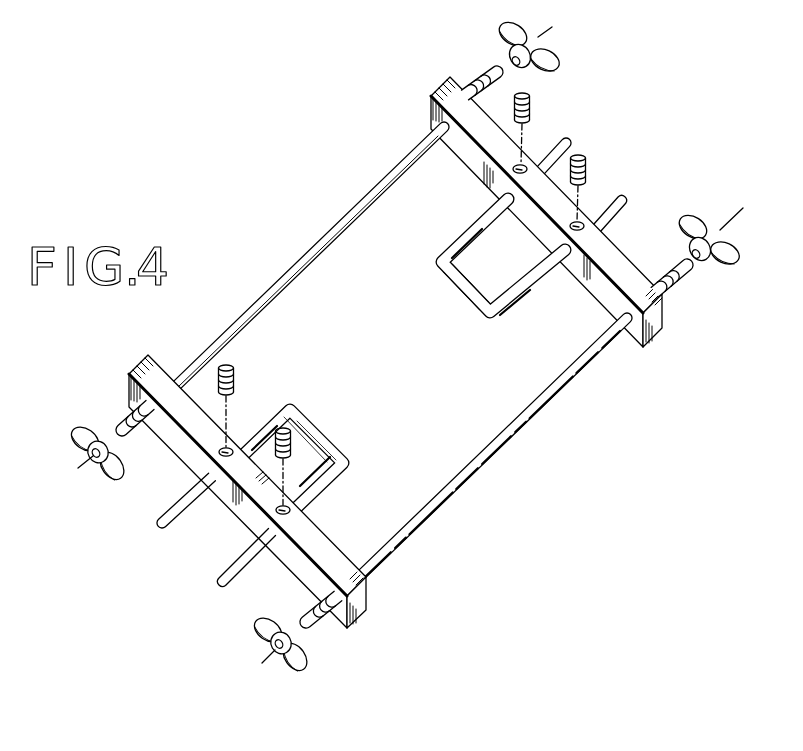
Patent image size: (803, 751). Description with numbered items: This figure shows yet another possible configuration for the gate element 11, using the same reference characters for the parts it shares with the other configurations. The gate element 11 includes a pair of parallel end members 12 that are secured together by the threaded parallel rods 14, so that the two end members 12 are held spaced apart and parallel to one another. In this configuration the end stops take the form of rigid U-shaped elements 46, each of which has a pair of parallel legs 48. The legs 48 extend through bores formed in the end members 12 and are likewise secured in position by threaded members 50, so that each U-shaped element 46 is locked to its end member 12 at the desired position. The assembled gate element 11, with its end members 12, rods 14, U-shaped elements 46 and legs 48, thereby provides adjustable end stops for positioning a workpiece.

The gate element 11 is at (665, 86).
The end member 12 is at (463, 153).
The parallel rod 14 is at (551, 394).
The rigid U-shaped element 46 is at (468, 297).
The parallel leg 48 is at (460, 231).
The threaded member 50 is at (532, 107).